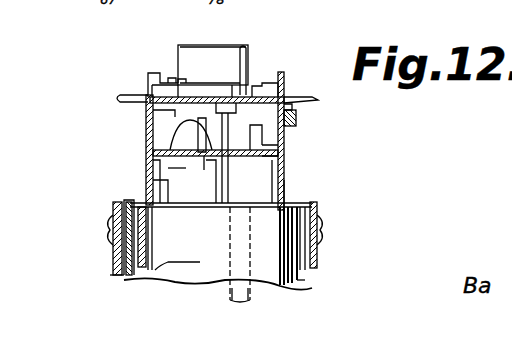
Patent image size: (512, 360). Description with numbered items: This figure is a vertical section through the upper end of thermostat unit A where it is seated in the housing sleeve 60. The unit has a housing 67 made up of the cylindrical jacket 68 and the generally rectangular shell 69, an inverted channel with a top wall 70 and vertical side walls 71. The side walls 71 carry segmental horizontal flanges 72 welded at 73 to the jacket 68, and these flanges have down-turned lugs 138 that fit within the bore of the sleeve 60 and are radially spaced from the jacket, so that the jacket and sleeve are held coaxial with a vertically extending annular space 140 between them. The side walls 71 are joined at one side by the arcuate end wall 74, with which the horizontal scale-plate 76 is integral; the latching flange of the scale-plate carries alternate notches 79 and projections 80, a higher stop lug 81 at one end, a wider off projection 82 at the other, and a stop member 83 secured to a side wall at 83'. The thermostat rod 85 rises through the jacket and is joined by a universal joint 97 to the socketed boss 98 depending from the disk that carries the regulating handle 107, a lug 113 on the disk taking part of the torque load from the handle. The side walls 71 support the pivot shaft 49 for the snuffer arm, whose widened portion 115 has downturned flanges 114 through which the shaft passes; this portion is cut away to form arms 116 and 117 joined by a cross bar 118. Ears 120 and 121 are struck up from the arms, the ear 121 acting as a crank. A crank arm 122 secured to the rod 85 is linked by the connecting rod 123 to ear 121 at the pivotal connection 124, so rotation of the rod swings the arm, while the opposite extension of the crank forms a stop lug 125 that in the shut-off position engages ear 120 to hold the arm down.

The regulating handle 107 is at (224, 45).
The socketed boss 98 is at (232, 85).
The top wall 70 is at (246, 52).
The stop lug 81 is at (150, 74).
The notches 79 is at (174, 80).
The projections 80 is at (181, 80).
The scale-plate 76 is at (136, 98).
The side walls 71 is at (146, 108).
The off projection 82 is at (281, 74).
The shell 69 is at (290, 88).
The stop member 83 is at (302, 74).
The securing point of stop member 83' is at (318, 101).
The stop lug 125 is at (296, 118).
The universal joint connection 97 is at (226, 108).
The arm 116 is at (236, 206).
The lug 113 is at (152, 118).
The crank arm 122 is at (202, 130).
The connecting rod 123 is at (166, 135).
The ear 121 is at (150, 153).
The pivotal connection 124 is at (206, 158).
The ear 120 is at (270, 135).
The widened portion 115 is at (262, 150).
The flanges 114 is at (148, 172).
The pivot shaft 49 is at (150, 185).
The arm 117 is at (172, 168).
The cross bar 118 is at (213, 168).
The segmental horizontal flanges 72 is at (114, 200).
The lugs 138 is at (114, 245).
The annular space 140 is at (114, 275).
The weld 73 is at (150, 212).
The end wall 74 is at (185, 205).
The housing sleeve 60 is at (324, 240).
The housing 67 is at (180, 275).
The rod 85 is at (222, 296).
The cylindrical jacket 68 is at (286, 282).